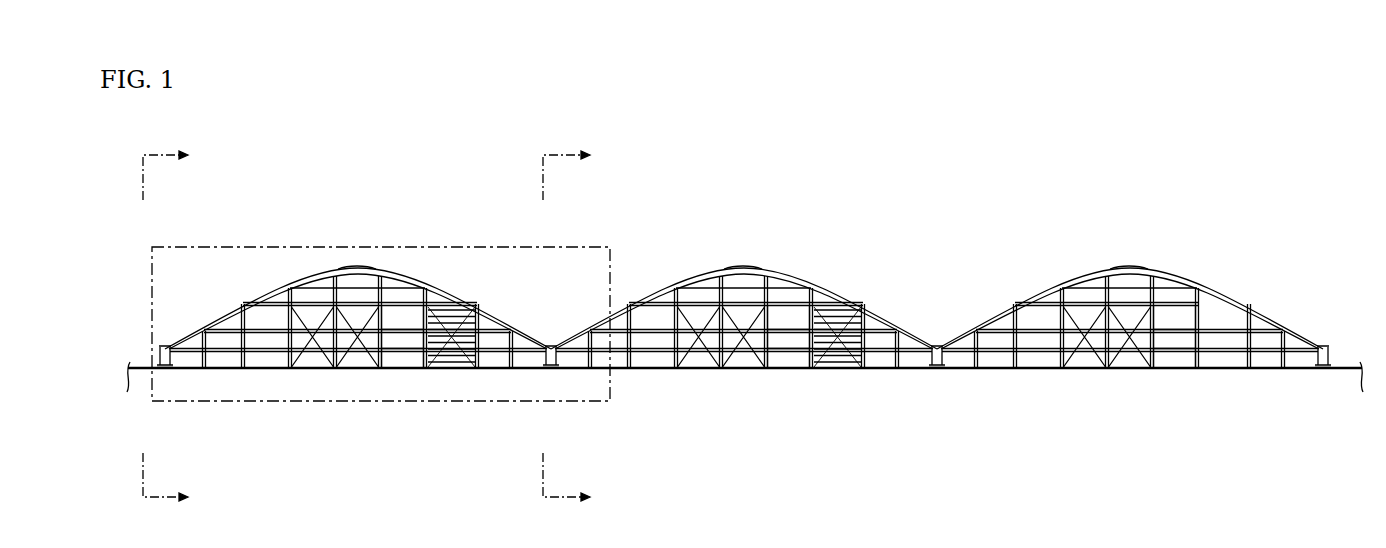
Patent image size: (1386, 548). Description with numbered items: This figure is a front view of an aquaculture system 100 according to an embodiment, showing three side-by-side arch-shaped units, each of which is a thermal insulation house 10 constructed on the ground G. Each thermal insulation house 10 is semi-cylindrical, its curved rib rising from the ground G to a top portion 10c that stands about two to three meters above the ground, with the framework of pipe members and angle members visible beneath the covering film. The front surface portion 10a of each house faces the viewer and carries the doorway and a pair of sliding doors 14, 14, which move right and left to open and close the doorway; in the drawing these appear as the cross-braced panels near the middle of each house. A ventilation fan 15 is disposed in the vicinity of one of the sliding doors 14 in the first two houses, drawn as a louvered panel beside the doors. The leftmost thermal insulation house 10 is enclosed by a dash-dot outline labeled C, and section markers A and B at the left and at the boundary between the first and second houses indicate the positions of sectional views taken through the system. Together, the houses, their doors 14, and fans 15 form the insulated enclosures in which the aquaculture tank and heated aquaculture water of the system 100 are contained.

The aquaculture system 100 is at (744, 319).
The thermal insulation house 10 is at (744, 280).
The top portion 10c is at (357, 266).
The front surface portion 10a is at (402, 338).
The sliding door 14 is at (310, 355).
The ventilation fan 15 is at (455, 337).
The ground G is at (135, 366).
The region C is at (317, 243).
The section line A is at (176, 327).
The section line B is at (577, 327).